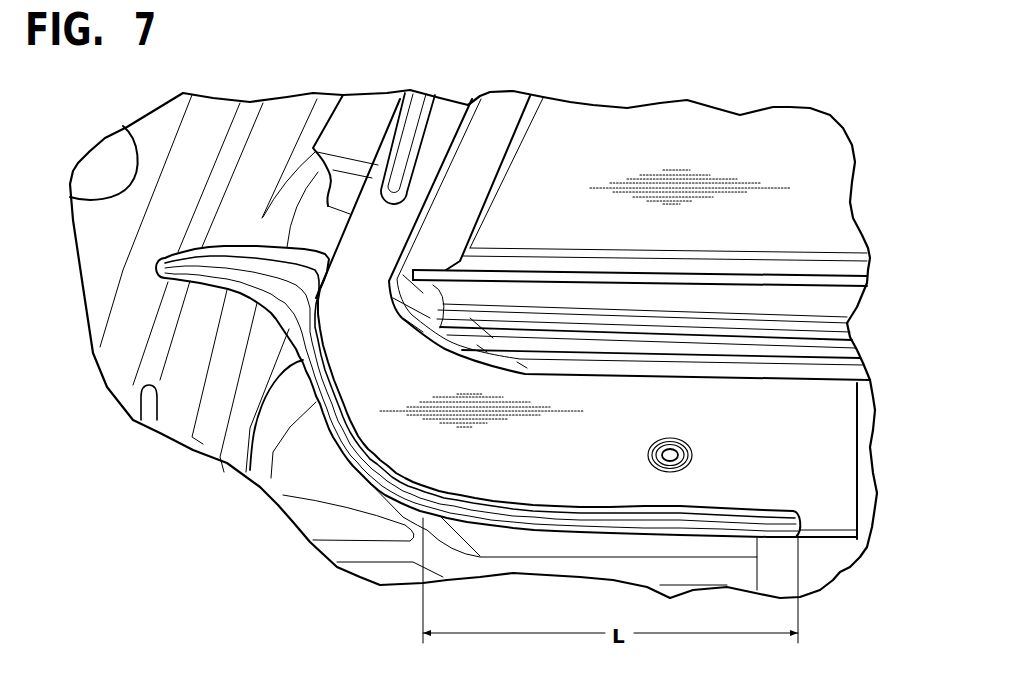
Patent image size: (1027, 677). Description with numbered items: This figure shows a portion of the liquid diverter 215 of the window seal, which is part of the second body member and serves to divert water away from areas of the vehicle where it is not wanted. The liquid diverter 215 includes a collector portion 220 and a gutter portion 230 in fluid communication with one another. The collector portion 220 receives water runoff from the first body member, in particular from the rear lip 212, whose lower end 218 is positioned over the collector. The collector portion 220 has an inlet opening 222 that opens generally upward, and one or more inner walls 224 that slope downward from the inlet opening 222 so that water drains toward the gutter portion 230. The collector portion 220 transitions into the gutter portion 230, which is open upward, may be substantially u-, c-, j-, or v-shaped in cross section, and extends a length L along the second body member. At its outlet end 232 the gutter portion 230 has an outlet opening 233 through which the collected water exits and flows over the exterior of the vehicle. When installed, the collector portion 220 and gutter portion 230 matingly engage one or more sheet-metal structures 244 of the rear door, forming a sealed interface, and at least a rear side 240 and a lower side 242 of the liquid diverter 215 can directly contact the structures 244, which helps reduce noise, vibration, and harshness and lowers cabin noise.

The rear lip 212 is at (340, 128).
The liquid diverter 215 is at (318, 452).
The lower end 218 is at (333, 212).
The collector portion 220 is at (213, 295).
The inlet opening 222 is at (245, 257).
The inner wall 224 is at (300, 302).
The gutter portion 230 is at (634, 398).
The outlet end 232 is at (800, 517).
The outlet opening 233 is at (808, 514).
The rear side 240 is at (250, 460).
The lower side 242 is at (670, 540).
The structure 244 is at (370, 553).